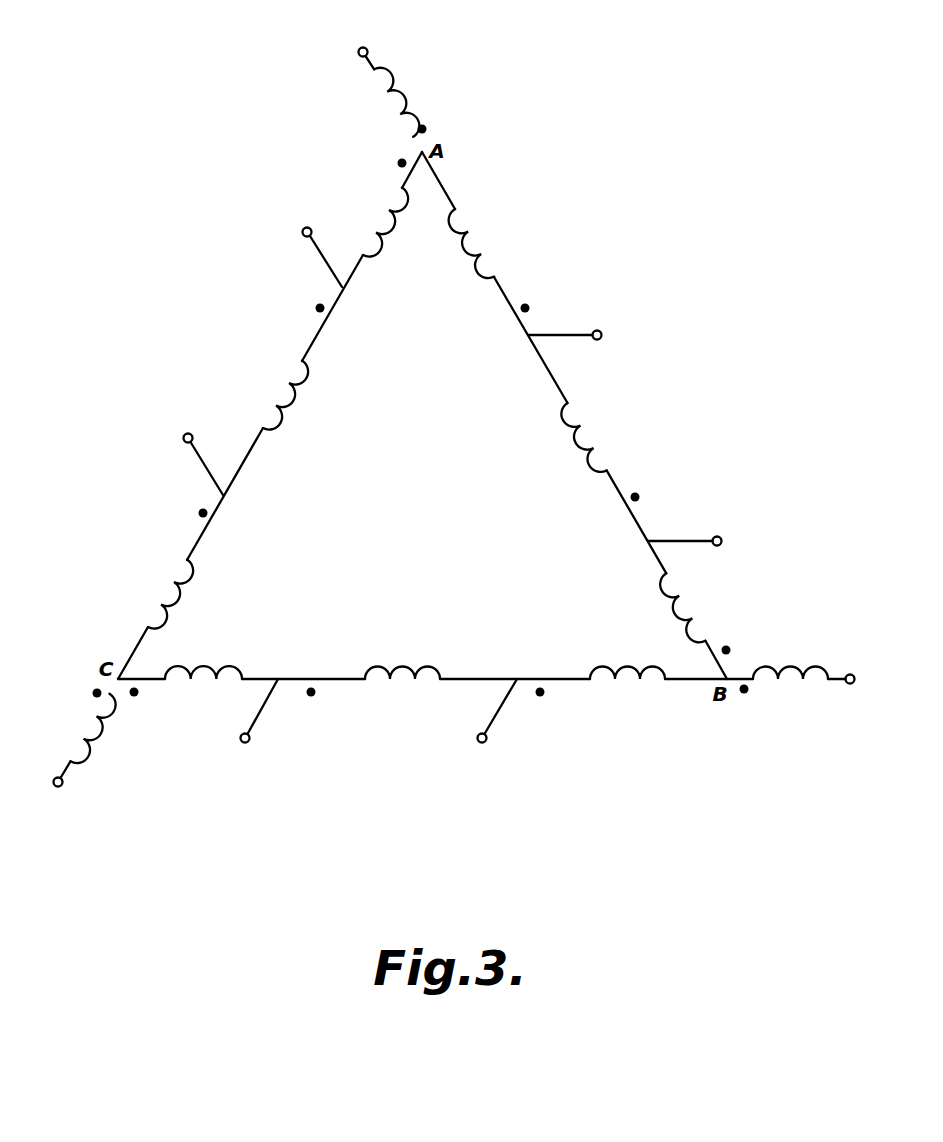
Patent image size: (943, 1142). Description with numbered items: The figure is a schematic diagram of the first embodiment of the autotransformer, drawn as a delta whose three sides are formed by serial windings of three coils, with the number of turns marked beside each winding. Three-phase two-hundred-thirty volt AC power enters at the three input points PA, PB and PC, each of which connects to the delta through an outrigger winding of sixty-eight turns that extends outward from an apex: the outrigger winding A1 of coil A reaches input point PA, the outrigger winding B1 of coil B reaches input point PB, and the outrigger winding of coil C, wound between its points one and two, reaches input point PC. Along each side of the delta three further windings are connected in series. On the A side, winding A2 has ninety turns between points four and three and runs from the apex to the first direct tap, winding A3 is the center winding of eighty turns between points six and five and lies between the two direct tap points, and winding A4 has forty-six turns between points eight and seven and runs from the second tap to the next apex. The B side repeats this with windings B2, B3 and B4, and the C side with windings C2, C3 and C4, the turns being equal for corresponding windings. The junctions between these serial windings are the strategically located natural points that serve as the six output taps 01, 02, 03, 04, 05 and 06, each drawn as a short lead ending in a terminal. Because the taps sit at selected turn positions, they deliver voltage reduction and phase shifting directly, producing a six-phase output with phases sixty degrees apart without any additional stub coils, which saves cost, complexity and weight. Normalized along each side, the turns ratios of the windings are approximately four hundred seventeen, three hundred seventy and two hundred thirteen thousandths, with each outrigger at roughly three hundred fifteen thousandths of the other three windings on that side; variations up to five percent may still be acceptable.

The outrigger winding A1 is at (381, 93).
The winding A2 is at (474, 241).
The winding A3 is at (581, 430).
The winding A4 is at (680, 604).
The outrigger winding B1 is at (790, 680).
The winding B2 is at (615, 682).
The winding B3 is at (395, 682).
The winding B4 is at (199, 680).
The coil C is at (94, 724).
The winding C2 is at (176, 580).
The winding C3 is at (288, 390).
The winding C4 is at (391, 217).
The input point PA is at (355, 41).
The input point PB is at (838, 666).
The input point PC is at (52, 790).
The output tap 01 is at (568, 323).
The output tap 02 is at (307, 257).
The output tap 03 is at (187, 463).
The output tap 04 is at (260, 716).
The output tap 05 is at (498, 716).
The output tap 06 is at (690, 528).